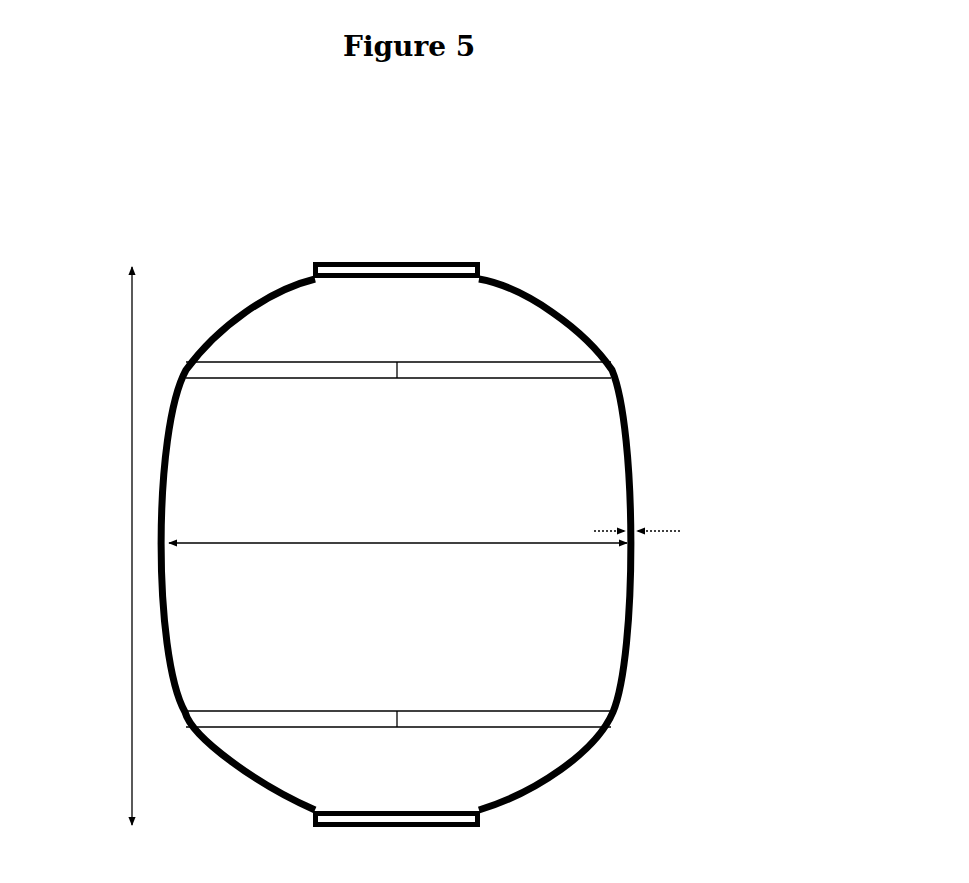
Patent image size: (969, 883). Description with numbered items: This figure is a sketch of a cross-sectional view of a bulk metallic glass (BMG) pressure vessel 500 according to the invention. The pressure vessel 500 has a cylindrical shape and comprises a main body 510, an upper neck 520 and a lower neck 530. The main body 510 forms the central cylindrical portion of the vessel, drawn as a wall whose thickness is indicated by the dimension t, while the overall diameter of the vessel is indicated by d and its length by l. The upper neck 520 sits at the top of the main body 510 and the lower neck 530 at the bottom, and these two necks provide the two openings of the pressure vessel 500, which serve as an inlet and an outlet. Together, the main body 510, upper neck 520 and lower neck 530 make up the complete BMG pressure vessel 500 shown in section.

The pressure vessel 500 is at (101, 171).
The main body 510 is at (646, 607).
The upper neck 520 is at (492, 270).
The lower neck 530 is at (492, 820).